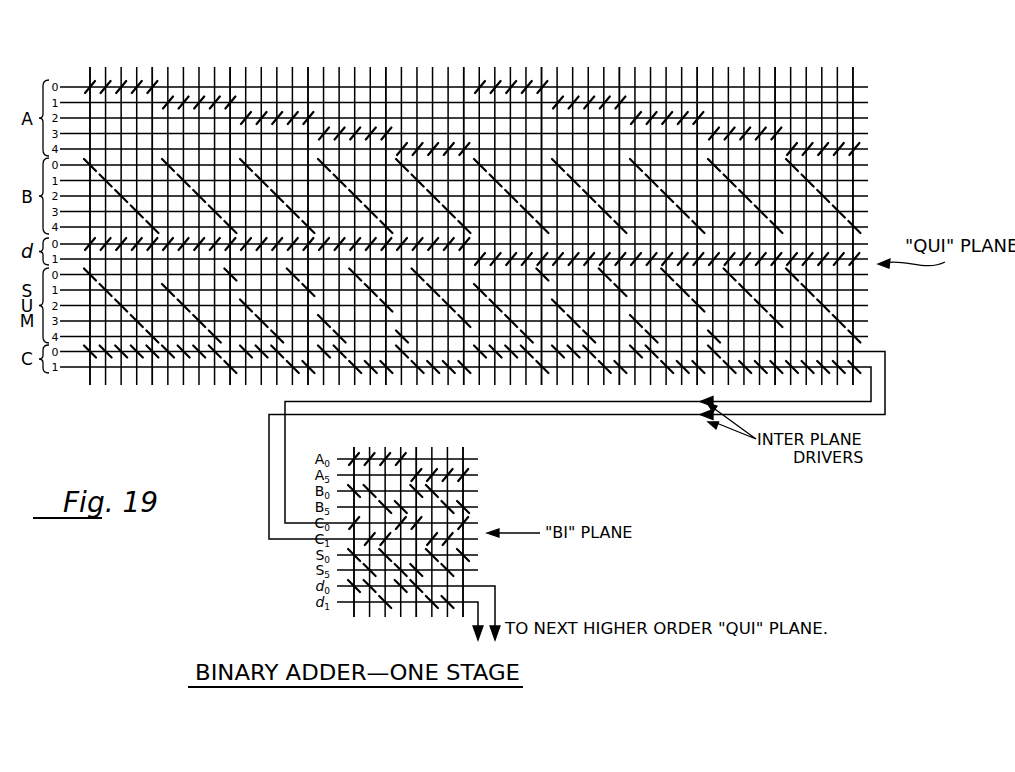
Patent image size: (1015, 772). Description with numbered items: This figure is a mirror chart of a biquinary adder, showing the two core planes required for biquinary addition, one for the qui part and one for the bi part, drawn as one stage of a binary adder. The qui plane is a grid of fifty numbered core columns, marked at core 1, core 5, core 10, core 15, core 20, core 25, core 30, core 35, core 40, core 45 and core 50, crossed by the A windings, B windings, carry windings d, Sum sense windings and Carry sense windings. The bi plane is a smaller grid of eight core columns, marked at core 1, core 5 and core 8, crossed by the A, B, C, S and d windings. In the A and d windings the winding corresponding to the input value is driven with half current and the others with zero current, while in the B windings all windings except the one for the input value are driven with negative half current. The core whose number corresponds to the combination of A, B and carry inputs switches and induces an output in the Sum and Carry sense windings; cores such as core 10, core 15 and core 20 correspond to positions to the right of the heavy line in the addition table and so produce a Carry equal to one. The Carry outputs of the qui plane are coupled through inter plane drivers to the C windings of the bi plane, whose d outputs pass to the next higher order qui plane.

The core 1 is at (222, 330).
The core 5 is at (284, 330).
The core 8 is at (463, 520).
The core 10 is at (230, 214).
The core 15 is at (308, 214).
The core 20 is at (386, 214).
The core 25 is at (464, 214).
The core 30 is at (542, 214).
The core 35 is at (619, 214).
The core 40 is at (697, 214).
The core 45 is at (775, 214).
The core 50 is at (853, 214).